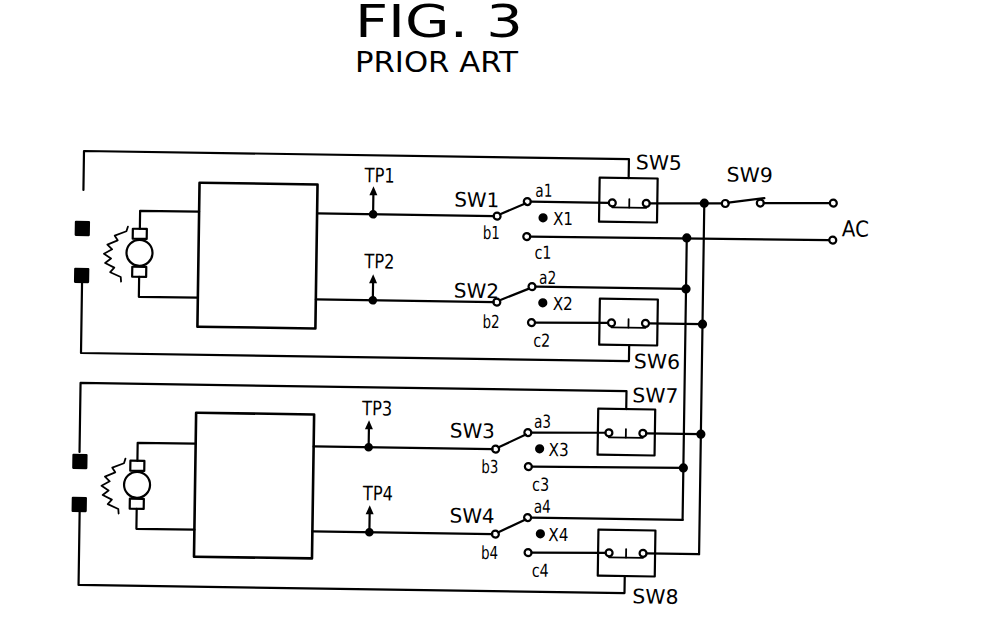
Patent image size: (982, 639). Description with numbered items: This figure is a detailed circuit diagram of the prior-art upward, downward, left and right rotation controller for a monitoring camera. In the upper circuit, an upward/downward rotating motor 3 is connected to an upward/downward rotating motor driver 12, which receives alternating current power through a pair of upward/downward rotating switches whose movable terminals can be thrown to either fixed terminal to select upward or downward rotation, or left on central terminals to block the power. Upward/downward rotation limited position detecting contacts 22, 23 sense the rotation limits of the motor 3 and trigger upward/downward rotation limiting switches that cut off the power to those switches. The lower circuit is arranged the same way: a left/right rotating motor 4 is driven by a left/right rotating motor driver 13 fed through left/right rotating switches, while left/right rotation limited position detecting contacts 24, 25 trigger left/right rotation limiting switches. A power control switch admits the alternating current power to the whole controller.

The upward/downward rotating motor 3 is at (128, 254).
The left/right rotating motor 4 is at (125, 486).
The upward/downward rotating motor driver 12 is at (282, 182).
The left/right rotating motor driver 13 is at (286, 555).
The upward/downward rotation limited position detecting contact 22 is at (76, 228).
The upward/downward rotation limited position detecting contact 23 is at (76, 275).
The left/right rotation limited position detecting contact 24 is at (77, 461).
The left/right rotation limited position detecting contact 25 is at (77, 504).